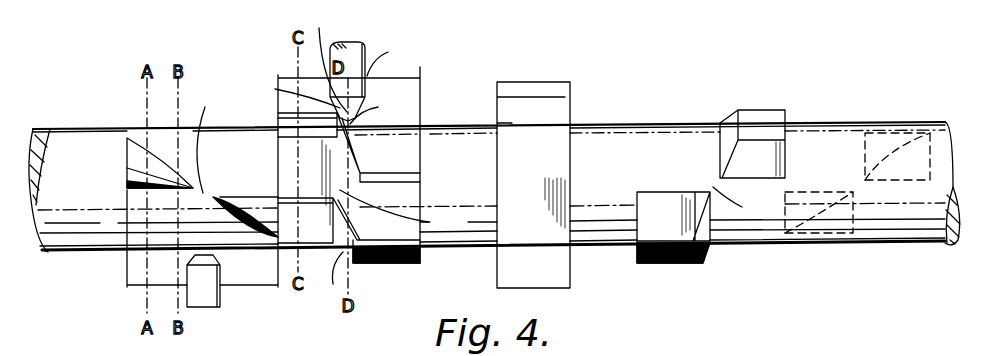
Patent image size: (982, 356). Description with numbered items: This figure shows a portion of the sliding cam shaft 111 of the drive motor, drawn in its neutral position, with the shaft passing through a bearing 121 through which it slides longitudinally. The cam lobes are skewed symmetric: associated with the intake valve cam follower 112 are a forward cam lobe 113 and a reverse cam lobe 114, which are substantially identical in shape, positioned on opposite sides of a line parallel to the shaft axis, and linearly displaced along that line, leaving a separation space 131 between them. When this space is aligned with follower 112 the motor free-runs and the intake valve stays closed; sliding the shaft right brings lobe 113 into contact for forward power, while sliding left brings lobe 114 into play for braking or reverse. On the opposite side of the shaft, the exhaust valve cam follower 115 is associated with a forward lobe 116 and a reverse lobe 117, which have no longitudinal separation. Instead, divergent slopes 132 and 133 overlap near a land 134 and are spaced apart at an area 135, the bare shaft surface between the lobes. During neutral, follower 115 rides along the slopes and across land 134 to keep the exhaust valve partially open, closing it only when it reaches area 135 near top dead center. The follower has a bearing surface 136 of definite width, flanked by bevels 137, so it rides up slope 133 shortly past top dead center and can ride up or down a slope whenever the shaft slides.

The cam shaft 111 is at (595, 138).
The intake valve cam follower 112 is at (196, 299).
The forward cam lobe 113 is at (132, 160).
The reverse cam lobe 114 is at (257, 208).
The exhaust valve cam follower 115 is at (345, 44).
The forward lobe 116 is at (278, 118).
The reverse lobe 117 is at (383, 235).
The bearing 121 is at (547, 107).
The separation space 131 is at (205, 140).
The slope 132 is at (378, 108).
The slope 133 is at (326, 277).
The land 134 is at (400, 211).
The area 135 is at (743, 202).
The bearing surface 136 is at (322, 59).
The bevels 137 is at (330, 73).